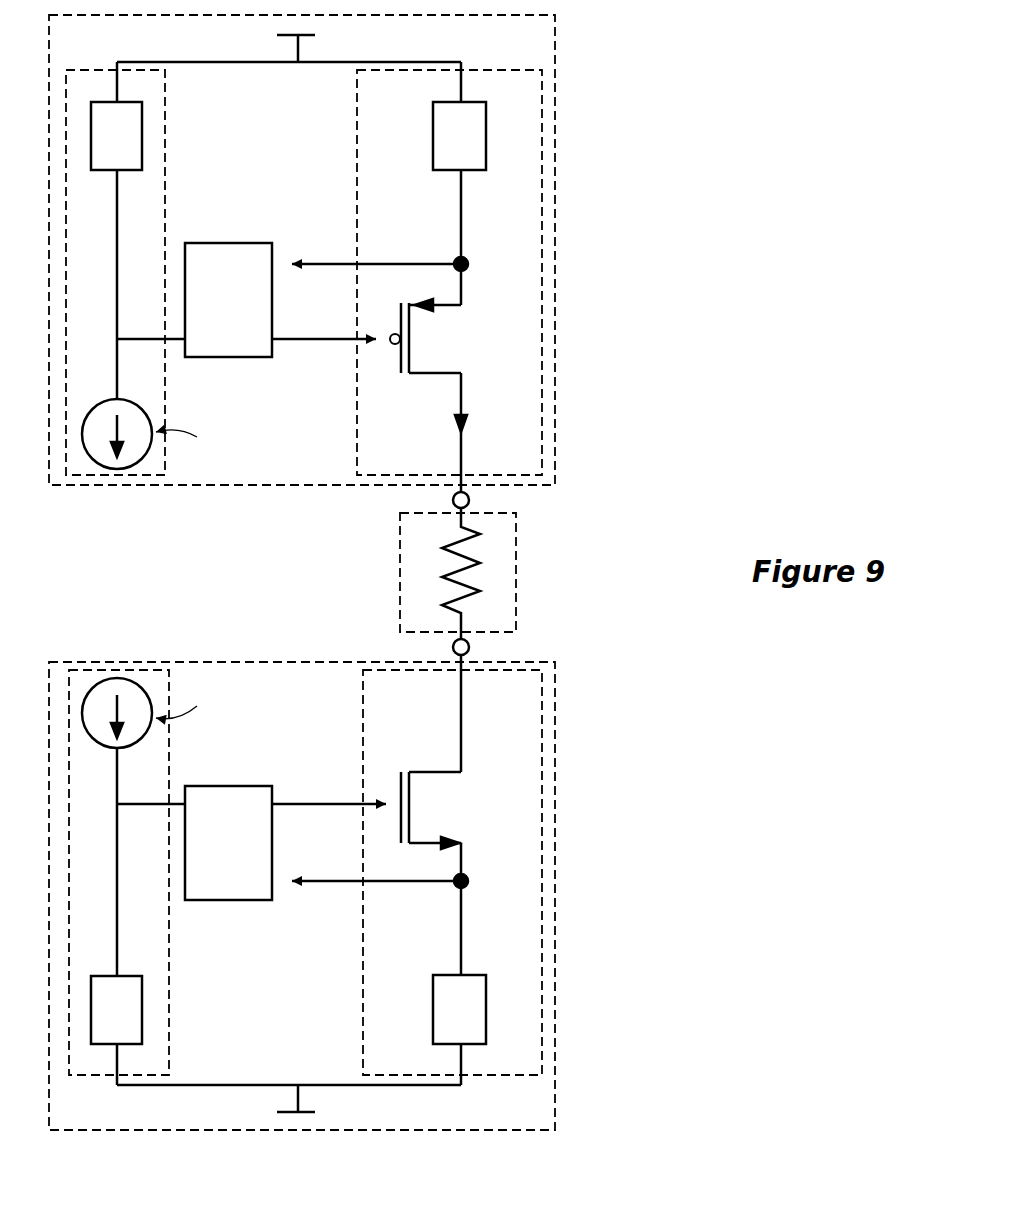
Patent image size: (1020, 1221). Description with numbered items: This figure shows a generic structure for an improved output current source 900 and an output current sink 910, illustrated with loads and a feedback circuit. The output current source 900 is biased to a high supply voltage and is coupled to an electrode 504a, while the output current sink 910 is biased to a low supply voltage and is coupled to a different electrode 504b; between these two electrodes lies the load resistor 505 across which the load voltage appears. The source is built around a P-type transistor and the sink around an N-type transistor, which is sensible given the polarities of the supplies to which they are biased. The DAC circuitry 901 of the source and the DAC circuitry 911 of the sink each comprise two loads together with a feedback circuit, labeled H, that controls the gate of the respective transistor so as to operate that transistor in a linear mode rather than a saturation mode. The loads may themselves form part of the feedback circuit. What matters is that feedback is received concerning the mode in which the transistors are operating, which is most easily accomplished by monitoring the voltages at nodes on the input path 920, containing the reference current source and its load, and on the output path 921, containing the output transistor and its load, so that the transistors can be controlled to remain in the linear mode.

The output current source 900 is at (585, 271).
The DAC circuitry 901 is at (229, 160).
The output current sink 910 is at (584, 876).
The DAC circuitry 911 is at (221, 974).
The input path 920 is at (165, 228).
The output path 921 is at (357, 456).
The electrode 504a is at (469, 503).
The electrode 504b is at (469, 650).
The load resistor 505 is at (386, 583).